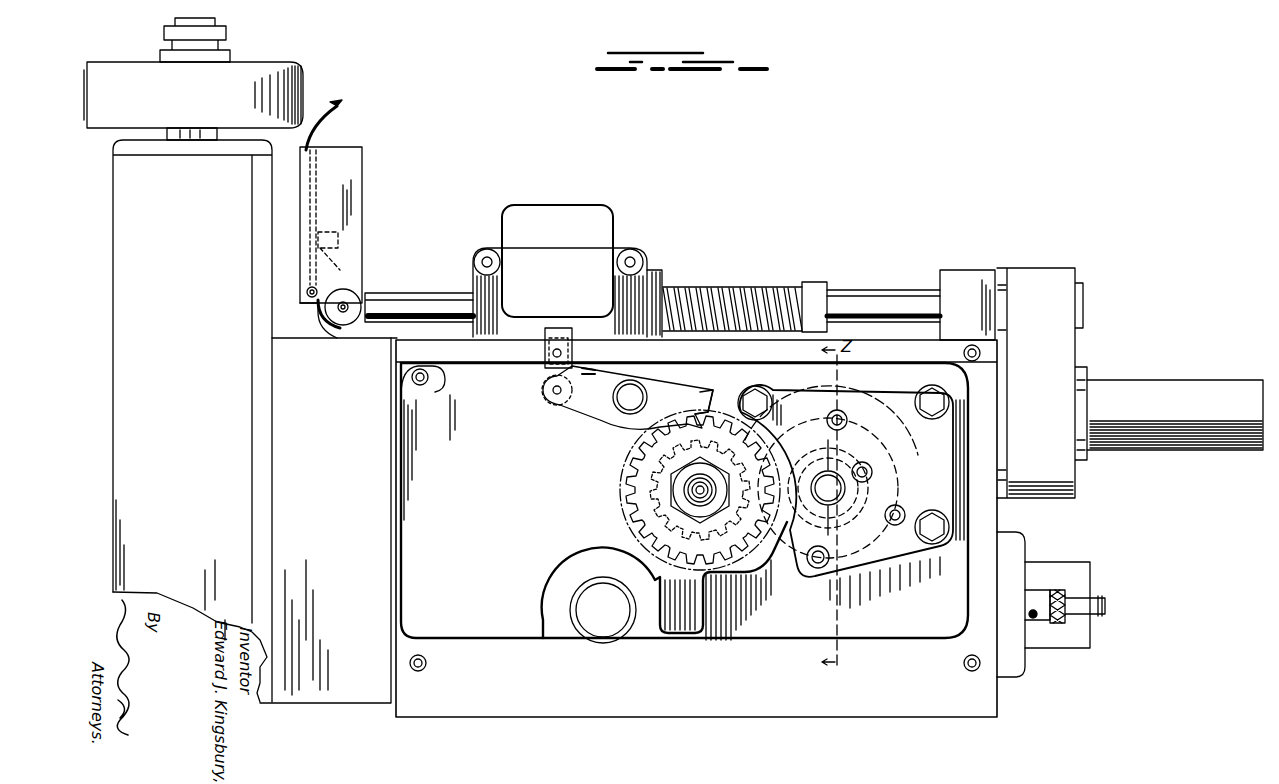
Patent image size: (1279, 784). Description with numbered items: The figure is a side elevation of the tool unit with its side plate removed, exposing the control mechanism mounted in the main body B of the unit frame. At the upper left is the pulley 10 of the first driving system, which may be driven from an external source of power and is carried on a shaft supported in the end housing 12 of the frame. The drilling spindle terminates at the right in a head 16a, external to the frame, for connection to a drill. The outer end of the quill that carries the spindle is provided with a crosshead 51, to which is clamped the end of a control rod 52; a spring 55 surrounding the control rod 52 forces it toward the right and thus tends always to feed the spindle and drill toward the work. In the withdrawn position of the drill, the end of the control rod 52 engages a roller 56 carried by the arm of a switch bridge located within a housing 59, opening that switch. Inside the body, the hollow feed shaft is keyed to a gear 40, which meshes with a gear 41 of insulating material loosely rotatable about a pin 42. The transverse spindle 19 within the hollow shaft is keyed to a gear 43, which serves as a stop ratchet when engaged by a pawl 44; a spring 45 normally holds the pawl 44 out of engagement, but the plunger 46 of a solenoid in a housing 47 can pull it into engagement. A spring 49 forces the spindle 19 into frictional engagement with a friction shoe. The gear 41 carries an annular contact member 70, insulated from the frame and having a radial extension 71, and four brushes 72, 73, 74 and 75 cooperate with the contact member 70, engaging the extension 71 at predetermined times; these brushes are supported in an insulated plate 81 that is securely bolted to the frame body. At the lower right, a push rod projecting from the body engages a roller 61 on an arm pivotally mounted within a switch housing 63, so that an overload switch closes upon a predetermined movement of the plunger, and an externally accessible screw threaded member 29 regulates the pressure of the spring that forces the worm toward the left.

The pulley 10 is at (307, 90).
The end housing 12 is at (192, 421).
The housing 59 is at (350, 175).
The roller 56 is at (358, 292).
The main body B is at (378, 360).
The housing 47 is at (587, 222).
The plunger 46 is at (545, 362).
The spring 55 is at (740, 284).
The control rod 52 is at (875, 300).
The insulated plate 81 is at (880, 393).
The spring 45 is at (587, 383).
The pawl 44 is at (704, 396).
The gear 43 is at (639, 460).
The gear 40 is at (627, 496).
The spindle 19 is at (692, 512).
The spring 49 is at (694, 492).
The gear 41 is at (880, 438).
The pin 42 is at (826, 505).
The contact member 70 is at (890, 568).
The radial extension 71 is at (831, 420).
The brush 73 is at (845, 415).
The brush 72 is at (868, 470).
The brush 74 is at (903, 512).
The brush 75 is at (835, 575).
The crosshead 51 is at (1047, 500).
The head 16a is at (1172, 430).
The switch housing 63 is at (1075, 573).
The roller 61 is at (1106, 605).
The screw threaded member 29 is at (1038, 627).